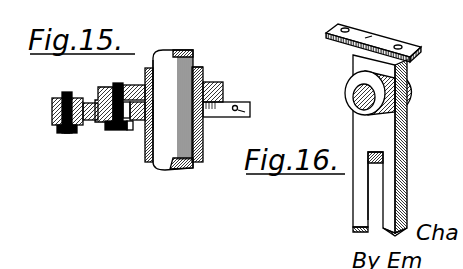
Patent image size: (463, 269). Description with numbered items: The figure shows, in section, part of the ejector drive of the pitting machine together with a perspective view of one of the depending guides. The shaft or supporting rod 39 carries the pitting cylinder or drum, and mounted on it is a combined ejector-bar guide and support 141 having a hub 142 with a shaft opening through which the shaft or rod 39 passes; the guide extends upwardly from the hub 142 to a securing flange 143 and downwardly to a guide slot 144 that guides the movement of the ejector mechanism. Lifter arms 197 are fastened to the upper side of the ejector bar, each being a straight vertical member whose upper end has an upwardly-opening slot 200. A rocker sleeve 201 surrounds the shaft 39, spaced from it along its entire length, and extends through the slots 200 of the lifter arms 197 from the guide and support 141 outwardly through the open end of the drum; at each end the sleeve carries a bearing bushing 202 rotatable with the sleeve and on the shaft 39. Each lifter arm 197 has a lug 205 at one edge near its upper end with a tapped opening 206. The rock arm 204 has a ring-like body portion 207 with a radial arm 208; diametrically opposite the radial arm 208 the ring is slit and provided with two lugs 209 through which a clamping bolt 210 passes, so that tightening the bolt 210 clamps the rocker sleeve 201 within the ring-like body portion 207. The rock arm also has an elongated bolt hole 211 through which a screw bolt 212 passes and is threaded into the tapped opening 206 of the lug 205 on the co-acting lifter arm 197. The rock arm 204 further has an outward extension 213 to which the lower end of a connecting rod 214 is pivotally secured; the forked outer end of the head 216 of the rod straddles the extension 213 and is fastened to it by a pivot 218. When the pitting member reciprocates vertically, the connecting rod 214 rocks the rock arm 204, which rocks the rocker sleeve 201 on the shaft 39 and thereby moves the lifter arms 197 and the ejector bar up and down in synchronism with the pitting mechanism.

In FIG. 15, the shaft or supporting rod 39 is at (192, 58).
In FIG. 16, the combined ejector-bar guide and support 141 is at (450, 126).
In FIG. 16, the hub 142 is at (347, 94).
In FIG. 16, the securing flange 143 is at (340, 50).
In FIG. 16, the guide slot 144 is at (370, 192).
In FIG. 15, the lifter arm 197 is at (268, 98).
In FIG. 15, the upwardly-opening slot 200 is at (206, 91).
In FIG. 15, the rocker sleeve 201 is at (203, 133).
In FIG. 15, the bearing bushing 202 is at (202, 70).
In FIG. 15, the rock arm 204 is at (103, 122).
In FIG. 15, the lug 205 is at (100, 88).
In FIG. 15, the tapped opening 206 is at (135, 83).
In FIG. 15, the ring-like body portion 207 is at (142, 124).
In FIG. 15, the radial arm 208 is at (99, 119).
In FIG. 15, the lug 209 is at (242, 108).
In FIG. 15, the clamping bolt 210 is at (247, 111).
In FIG. 15, the elongated bolt hole 211 is at (152, 111).
In FIG. 15, the screw bolt 212 is at (152, 91).
In FIG. 15, the outward extension 213 is at (53, 111).
In FIG. 15, the connecting rod 214 is at (58, 125).
In FIG. 15, the head 216 is at (60, 104).
In FIG. 15, the pivot 218 is at (70, 132).